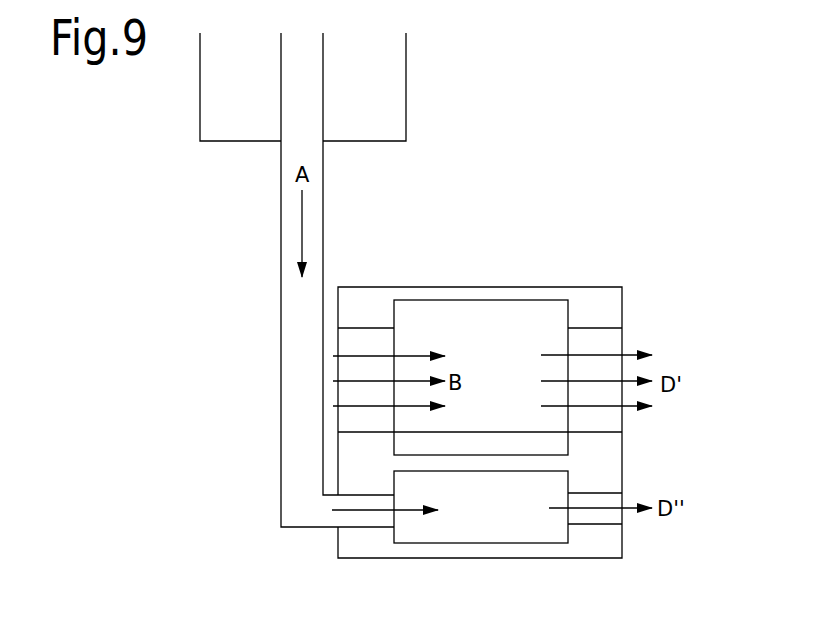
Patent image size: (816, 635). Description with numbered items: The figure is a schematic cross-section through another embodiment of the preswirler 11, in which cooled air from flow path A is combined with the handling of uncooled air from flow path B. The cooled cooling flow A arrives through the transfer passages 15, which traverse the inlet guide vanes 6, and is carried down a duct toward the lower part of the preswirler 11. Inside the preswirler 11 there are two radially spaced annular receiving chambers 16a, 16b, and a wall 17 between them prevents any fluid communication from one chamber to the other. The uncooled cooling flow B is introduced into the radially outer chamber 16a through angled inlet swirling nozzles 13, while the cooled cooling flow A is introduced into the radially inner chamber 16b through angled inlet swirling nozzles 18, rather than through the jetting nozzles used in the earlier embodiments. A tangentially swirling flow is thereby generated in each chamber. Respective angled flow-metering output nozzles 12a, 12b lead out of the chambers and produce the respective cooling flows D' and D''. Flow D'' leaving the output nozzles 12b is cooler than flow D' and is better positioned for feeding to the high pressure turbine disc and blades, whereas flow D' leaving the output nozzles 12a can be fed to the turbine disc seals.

The inlet guide vanes 6 is at (230, 116).
The transfer passages 15 is at (323, 82).
The preswirler 11 is at (607, 252).
The angled inlet swirling nozzles 13 is at (338, 327).
The radially outer receiving chamber 16a is at (476, 300).
The angled flow-metering output nozzles 12a is at (610, 328).
The wall 17 is at (525, 466).
The radially inner receiving chamber 16b is at (455, 543).
The angled flow-metering output nozzles 12b is at (608, 519).
The angled inlet swirling nozzles 18 is at (348, 527).